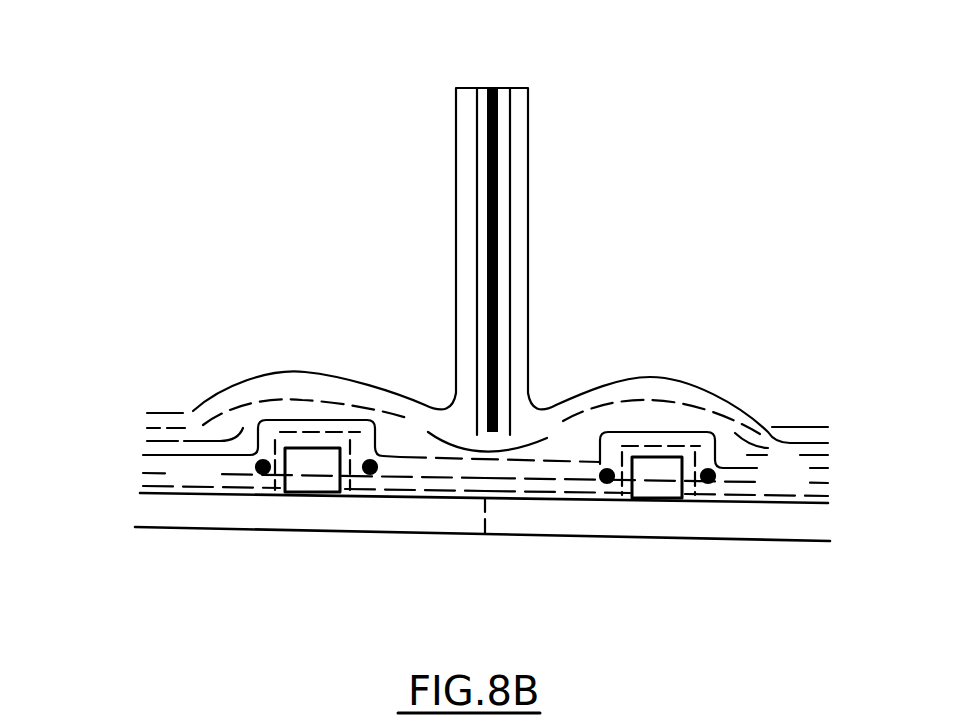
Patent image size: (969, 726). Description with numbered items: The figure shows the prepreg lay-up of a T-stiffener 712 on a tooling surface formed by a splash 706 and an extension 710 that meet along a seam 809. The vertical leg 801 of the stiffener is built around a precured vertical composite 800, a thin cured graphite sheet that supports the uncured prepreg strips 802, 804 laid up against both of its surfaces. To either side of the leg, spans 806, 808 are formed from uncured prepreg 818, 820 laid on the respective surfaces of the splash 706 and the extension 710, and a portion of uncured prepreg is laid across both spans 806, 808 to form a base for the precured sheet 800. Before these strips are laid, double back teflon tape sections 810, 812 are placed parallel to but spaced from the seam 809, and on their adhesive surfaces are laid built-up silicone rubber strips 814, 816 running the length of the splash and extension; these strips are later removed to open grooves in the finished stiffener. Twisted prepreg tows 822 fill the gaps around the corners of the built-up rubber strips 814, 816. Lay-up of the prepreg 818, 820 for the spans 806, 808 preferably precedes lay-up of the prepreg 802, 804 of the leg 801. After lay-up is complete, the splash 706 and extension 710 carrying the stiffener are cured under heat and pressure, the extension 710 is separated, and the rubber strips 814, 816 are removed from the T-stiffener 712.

The T-stiffener 712 is at (270, 126).
The precured vertical composite 800 is at (498, 116).
The T-stiffener leg 801 is at (529, 195).
The uncured prepreg strip 802 is at (476, 152).
The uncured prepreg strip 804 is at (512, 150).
The span 806 is at (314, 470).
The span 808 is at (656, 478).
The seam 809 is at (487, 507).
The double back teflon tape section 810 is at (300, 492).
The double back teflon tape section 812 is at (647, 500).
The silicone rubber strip 814 is at (318, 477).
The silicone rubber strip 816 is at (664, 481).
The uncured prepreg 818 is at (188, 423).
The uncured prepreg 820 is at (768, 433).
The twisted prepreg tows 822 is at (368, 460).
The splash 706 is at (484, 511).
The extension 710 is at (482, 525).